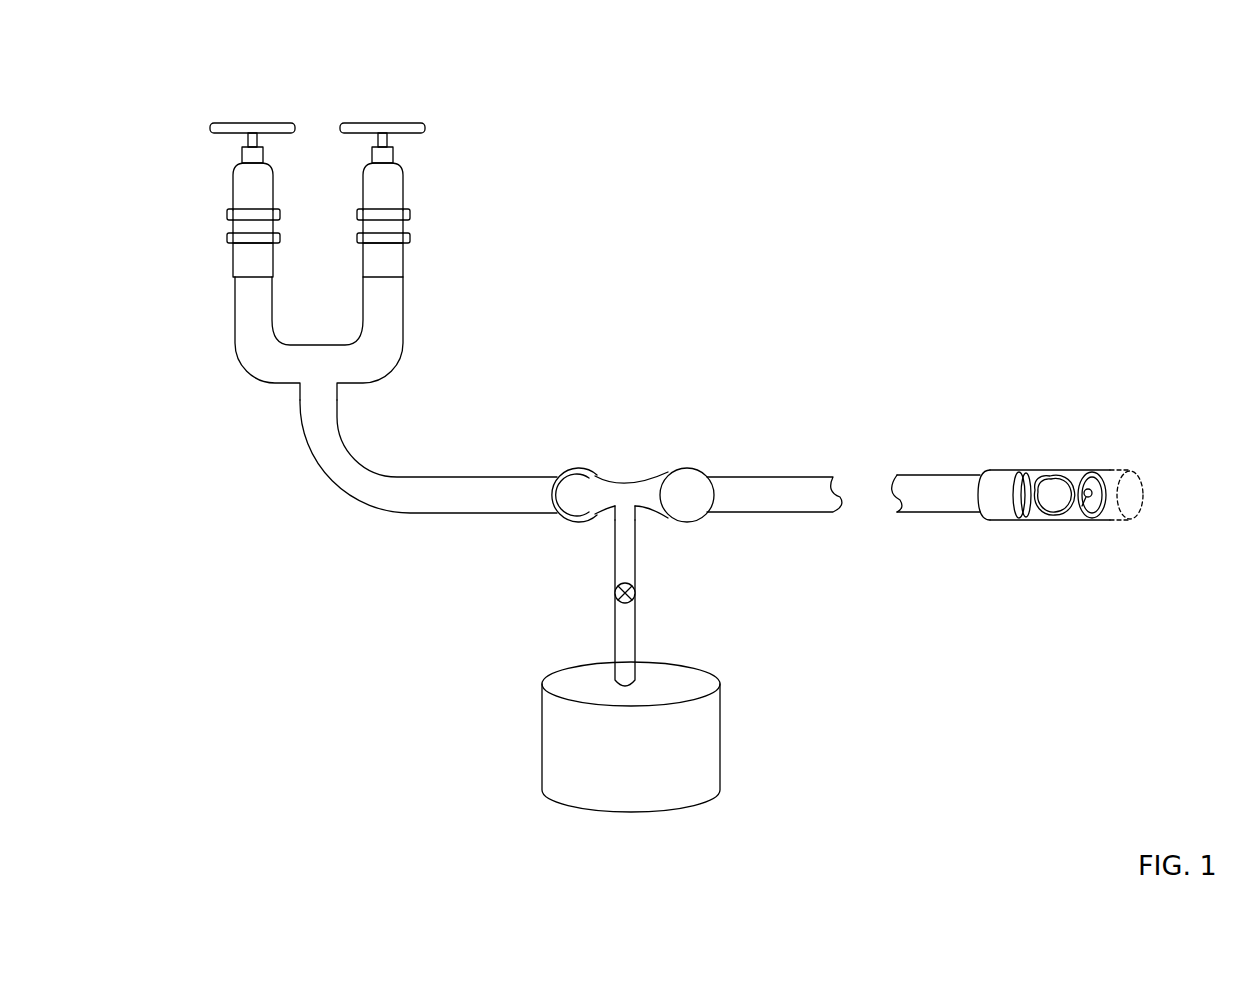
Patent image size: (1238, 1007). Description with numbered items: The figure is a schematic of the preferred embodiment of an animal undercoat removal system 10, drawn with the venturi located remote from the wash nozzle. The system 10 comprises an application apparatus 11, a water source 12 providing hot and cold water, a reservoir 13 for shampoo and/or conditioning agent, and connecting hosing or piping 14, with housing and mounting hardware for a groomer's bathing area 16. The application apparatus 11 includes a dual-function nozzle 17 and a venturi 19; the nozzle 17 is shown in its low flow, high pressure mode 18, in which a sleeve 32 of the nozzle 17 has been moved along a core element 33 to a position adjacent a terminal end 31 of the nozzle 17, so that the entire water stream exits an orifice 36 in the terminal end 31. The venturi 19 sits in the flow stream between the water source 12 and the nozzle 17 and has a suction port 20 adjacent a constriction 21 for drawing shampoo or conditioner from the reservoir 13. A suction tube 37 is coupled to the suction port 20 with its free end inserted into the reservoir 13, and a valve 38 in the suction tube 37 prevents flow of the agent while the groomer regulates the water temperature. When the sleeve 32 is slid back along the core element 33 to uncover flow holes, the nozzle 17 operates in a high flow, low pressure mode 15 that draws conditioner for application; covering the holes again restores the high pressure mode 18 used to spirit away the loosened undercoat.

The animal undercoat removal system 10 is at (1058, 425).
The application apparatus 11 is at (481, 437).
The water source 12 is at (251, 300).
The reservoir 13 is at (542, 778).
The connecting hosing or piping 14 is at (445, 477).
The high flow, low pressure mode 15 is at (1081, 442).
The groomer's bathing area 16 is at (252, 680).
The nozzle 17 is at (1012, 521).
The low flow, high pressure mode 18 is at (934, 439).
The venturi 19 is at (577, 490).
The suction port 20 is at (635, 507).
The constriction 21 is at (627, 483).
The terminal end 31 is at (1093, 494).
The sleeve 32 is at (1140, 482).
The core element 33 is at (1053, 505).
The orifice 36 is at (1107, 522).
The suction tube 37 is at (615, 542).
The valve 38 is at (615, 597).